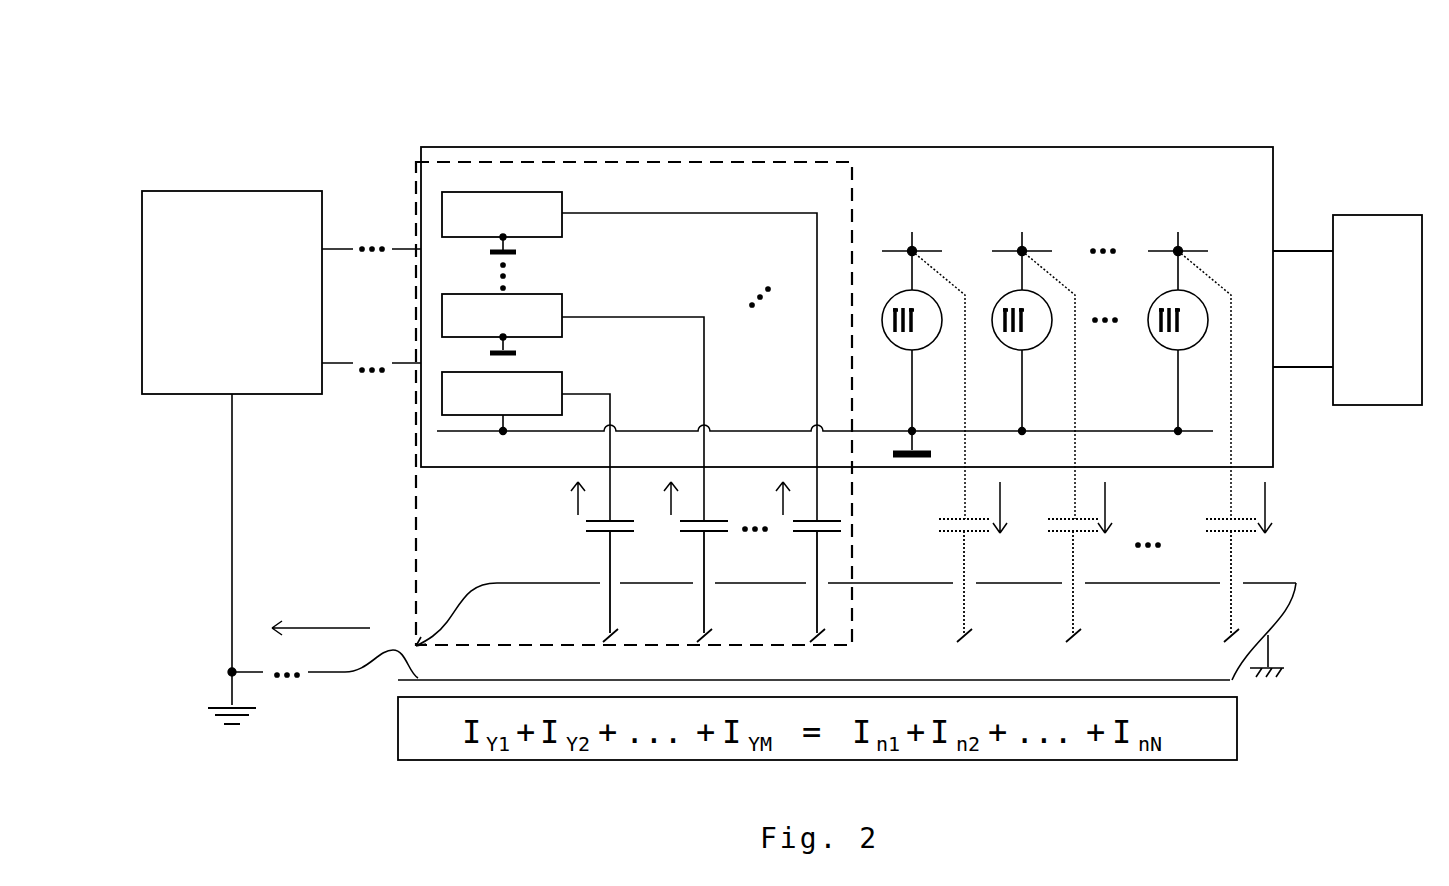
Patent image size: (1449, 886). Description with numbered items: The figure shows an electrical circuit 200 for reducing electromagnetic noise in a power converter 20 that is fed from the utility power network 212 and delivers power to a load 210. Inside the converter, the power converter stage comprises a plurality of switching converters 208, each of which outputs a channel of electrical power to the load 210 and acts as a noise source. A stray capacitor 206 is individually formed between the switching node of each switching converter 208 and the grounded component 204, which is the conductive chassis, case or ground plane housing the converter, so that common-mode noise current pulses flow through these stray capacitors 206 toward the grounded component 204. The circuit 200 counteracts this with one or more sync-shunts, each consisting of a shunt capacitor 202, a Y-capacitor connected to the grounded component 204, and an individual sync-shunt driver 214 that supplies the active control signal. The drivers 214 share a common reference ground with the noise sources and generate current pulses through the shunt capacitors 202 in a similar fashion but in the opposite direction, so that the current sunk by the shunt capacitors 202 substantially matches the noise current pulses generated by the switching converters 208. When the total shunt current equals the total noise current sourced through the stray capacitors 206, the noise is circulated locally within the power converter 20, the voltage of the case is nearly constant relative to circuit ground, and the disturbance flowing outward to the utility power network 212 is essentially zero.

The power converter 20 is at (1294, 119).
The electrical circuit 200 is at (517, 188).
The shunt capacitor 202 is at (603, 530).
The grounded component 204 is at (1228, 677).
The stray capacitor 206 is at (1232, 532).
The switching converter 208 is at (939, 222).
The load 210 is at (1398, 258).
The utility power network 212 is at (243, 200).
The sync-shunt driver 214 is at (460, 183).